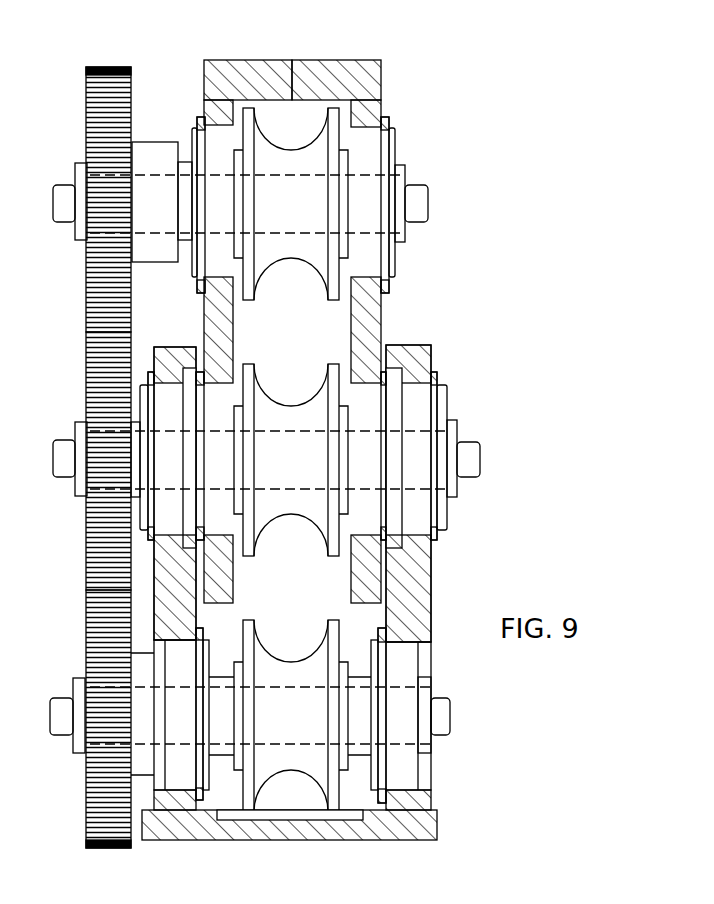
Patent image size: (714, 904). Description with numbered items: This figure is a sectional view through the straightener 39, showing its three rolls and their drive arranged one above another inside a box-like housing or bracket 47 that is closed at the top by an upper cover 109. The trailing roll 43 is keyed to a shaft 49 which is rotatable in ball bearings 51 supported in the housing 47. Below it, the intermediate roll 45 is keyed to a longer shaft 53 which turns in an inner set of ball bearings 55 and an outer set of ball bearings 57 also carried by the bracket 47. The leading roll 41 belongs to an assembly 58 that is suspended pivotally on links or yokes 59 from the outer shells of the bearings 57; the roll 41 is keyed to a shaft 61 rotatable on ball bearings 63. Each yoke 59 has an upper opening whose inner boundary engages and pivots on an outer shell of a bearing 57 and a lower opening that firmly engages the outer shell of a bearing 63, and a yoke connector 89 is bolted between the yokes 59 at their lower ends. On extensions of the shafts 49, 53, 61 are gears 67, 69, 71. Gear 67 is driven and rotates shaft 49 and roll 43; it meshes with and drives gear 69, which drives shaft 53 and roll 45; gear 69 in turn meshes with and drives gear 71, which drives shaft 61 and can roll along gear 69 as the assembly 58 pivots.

The straightener 39 is at (504, 529).
The leading roll 41 is at (320, 768).
The trailing roll 43 is at (318, 133).
The intermediate roll 45 is at (325, 372).
The housing 47 is at (301, 60).
The shaft 49 is at (368, 178).
The ball bearings 51 is at (204, 132).
The longer shaft 53 is at (412, 432).
The inner set of ball bearings 55 is at (360, 505).
The outer set of ball bearings 57 is at (170, 397).
The leading roll assembly 58 is at (440, 744).
The yokes 59 is at (160, 612).
The shaft 61 is at (420, 697).
The ball bearings 63 is at (407, 782).
The gear 67 is at (88, 254).
The gear 69 is at (90, 520).
The gear 71 is at (88, 793).
The yoke connector 89 is at (427, 833).
The upper cover 109 is at (363, 60).